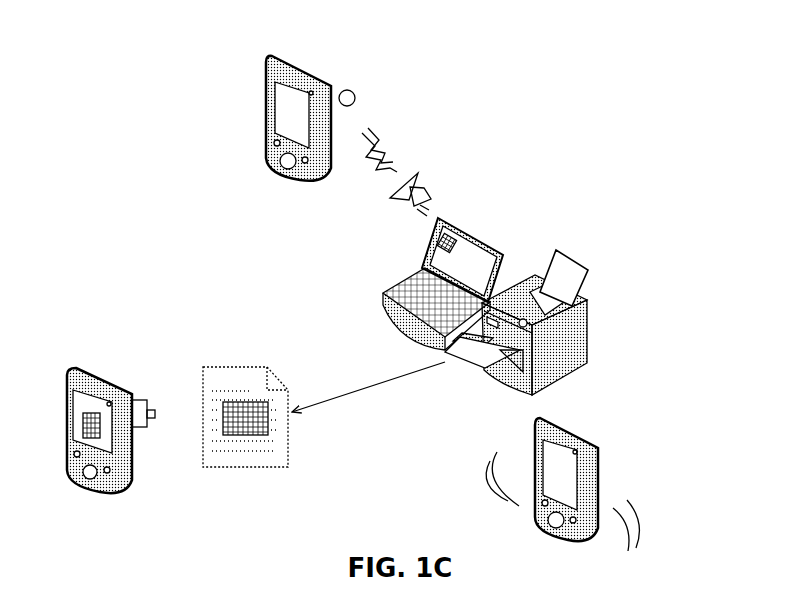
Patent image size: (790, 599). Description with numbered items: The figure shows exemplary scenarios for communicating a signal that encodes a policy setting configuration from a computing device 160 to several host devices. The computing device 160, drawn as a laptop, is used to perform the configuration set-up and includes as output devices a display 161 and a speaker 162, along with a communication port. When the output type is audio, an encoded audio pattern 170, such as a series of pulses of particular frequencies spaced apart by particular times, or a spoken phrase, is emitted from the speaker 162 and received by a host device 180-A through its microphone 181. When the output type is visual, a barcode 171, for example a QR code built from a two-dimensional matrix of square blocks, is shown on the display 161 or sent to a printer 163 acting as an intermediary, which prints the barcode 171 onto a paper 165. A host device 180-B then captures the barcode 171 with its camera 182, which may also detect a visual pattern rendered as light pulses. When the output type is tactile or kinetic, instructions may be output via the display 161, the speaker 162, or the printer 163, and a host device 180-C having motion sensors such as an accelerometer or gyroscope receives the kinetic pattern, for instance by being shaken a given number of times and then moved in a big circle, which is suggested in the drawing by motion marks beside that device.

The host device 180-A is at (292, 64).
The microphone 181 is at (355, 93).
The audio pattern 170 is at (388, 152).
The speaker 162 is at (428, 191).
The barcode 171 is at (449, 238).
The display 161 is at (443, 262).
The computing device 160 is at (398, 283).
The printer 163 is at (589, 330).
The paper 165 is at (247, 367).
The host device 180-B is at (95, 373).
The camera 182 is at (147, 401).
The host device 180-C is at (600, 470).